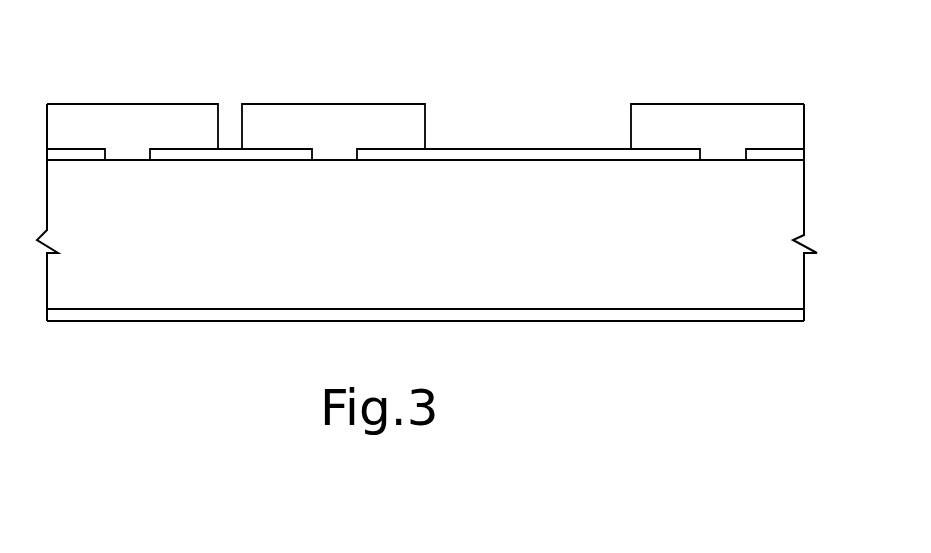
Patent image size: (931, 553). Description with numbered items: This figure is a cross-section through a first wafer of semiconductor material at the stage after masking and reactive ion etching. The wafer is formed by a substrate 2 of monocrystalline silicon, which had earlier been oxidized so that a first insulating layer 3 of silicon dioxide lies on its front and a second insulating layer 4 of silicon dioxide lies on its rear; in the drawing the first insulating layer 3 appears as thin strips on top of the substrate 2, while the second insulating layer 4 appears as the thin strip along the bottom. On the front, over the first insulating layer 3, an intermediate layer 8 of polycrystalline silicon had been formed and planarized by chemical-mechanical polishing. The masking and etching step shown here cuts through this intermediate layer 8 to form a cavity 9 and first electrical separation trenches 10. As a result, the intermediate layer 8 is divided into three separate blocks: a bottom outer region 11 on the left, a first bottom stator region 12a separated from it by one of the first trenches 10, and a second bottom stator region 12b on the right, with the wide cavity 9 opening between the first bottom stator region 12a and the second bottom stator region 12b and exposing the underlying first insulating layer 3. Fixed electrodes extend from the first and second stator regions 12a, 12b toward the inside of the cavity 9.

The substrate 2 is at (758, 204).
The first insulating layer 3 is at (197, 157).
The second insulating layer 4 is at (207, 313).
The intermediate layer 8 is at (808, 130).
The cavity 9 is at (522, 132).
The first electrical separation trenches 10 is at (230, 122).
The bottom outer region 11 is at (102, 125).
The first bottom stator region 12a is at (325, 138).
The second bottom stator region 12b is at (673, 120).